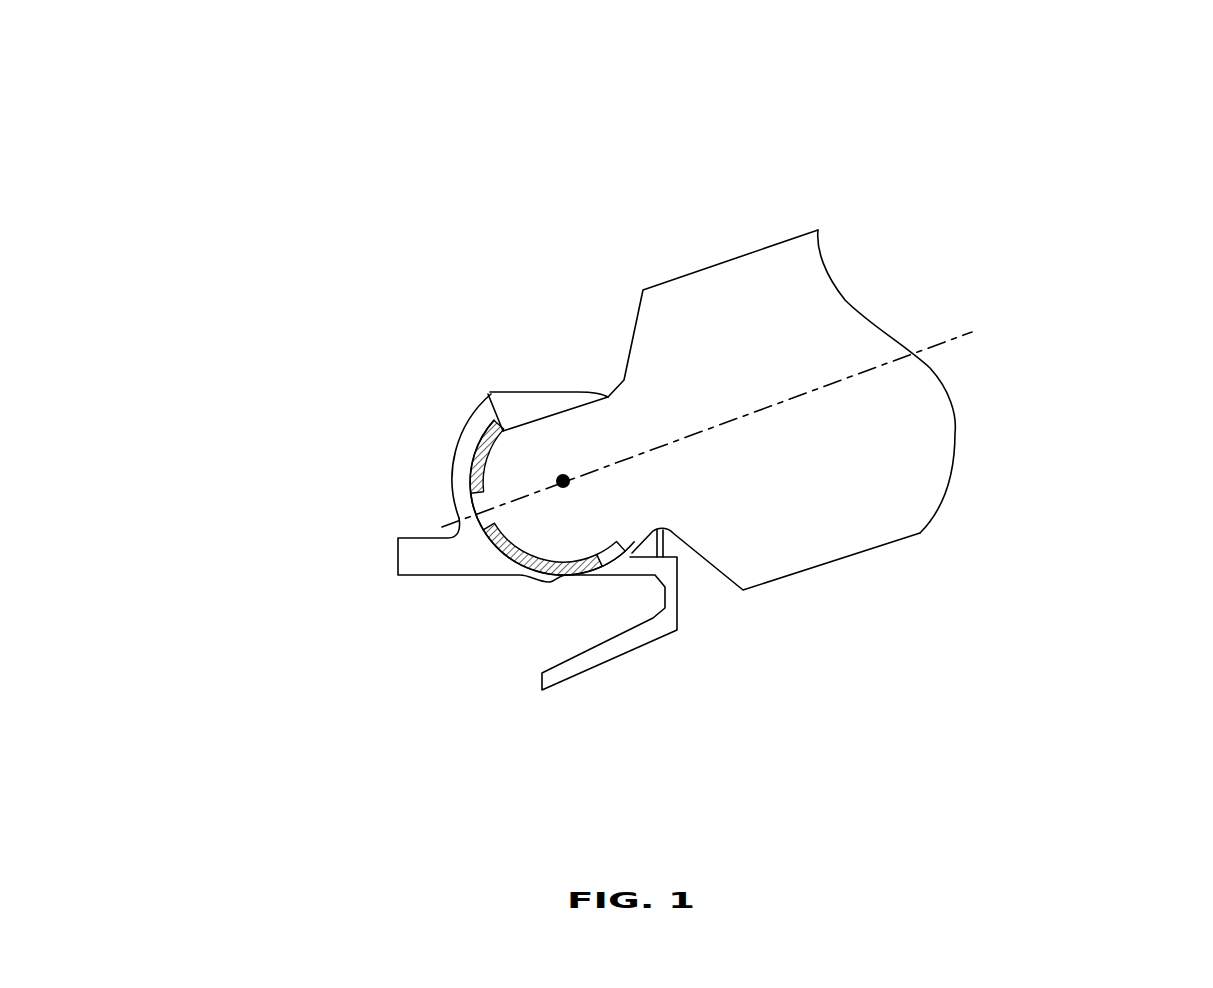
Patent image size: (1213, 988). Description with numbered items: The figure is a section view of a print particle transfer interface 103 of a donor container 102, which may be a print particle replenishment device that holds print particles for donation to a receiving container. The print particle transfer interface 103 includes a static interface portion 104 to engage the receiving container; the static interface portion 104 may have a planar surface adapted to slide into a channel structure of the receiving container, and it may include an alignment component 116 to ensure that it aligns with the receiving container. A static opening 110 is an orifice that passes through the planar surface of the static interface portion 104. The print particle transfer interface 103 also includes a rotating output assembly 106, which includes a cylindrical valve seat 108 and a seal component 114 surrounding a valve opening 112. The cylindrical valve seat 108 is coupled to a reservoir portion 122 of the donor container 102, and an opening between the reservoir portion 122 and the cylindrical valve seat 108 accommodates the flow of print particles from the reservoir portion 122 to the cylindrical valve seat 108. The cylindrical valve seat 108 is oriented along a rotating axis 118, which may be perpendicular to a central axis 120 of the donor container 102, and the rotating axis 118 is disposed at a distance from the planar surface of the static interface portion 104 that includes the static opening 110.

The donor container 102 is at (1000, 106).
The print particle transfer interface 103 is at (236, 625).
The static interface portion 104 is at (423, 577).
The rotating output assembly 106 is at (690, 224).
The cylindrical valve seat 108 is at (535, 418).
The static opening 110 is at (562, 578).
The valve opening 112 is at (477, 512).
The seal component 114 is at (473, 457).
The alignment component 116 is at (678, 620).
The rotating axis 118 is at (568, 478).
The central axis 120 is at (970, 333).
The reservoir portion 122 is at (870, 553).